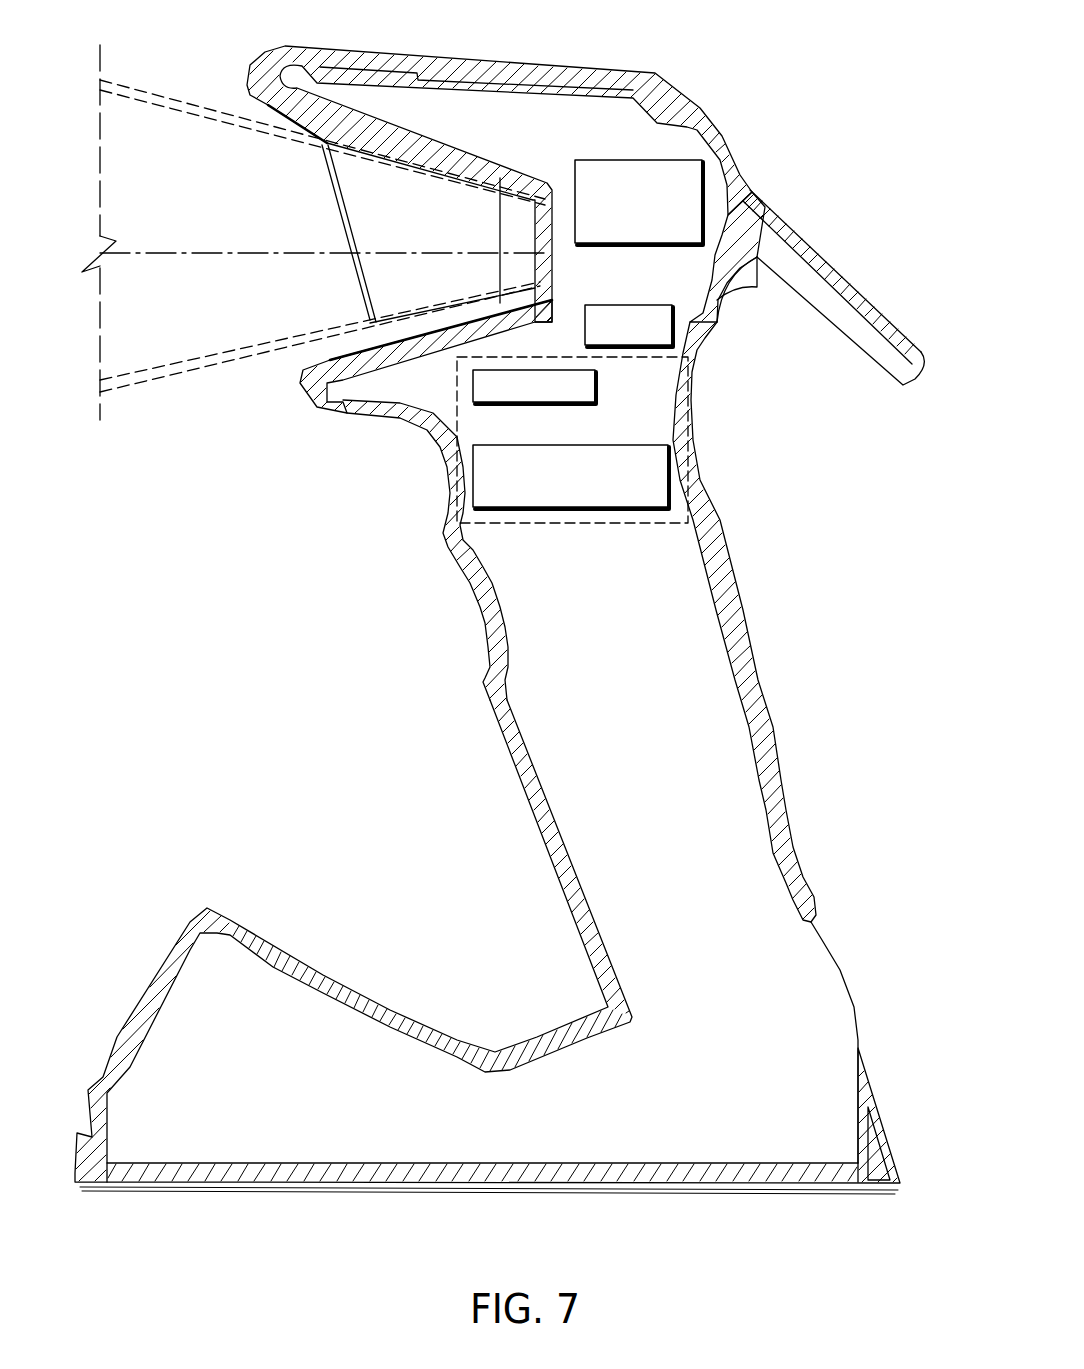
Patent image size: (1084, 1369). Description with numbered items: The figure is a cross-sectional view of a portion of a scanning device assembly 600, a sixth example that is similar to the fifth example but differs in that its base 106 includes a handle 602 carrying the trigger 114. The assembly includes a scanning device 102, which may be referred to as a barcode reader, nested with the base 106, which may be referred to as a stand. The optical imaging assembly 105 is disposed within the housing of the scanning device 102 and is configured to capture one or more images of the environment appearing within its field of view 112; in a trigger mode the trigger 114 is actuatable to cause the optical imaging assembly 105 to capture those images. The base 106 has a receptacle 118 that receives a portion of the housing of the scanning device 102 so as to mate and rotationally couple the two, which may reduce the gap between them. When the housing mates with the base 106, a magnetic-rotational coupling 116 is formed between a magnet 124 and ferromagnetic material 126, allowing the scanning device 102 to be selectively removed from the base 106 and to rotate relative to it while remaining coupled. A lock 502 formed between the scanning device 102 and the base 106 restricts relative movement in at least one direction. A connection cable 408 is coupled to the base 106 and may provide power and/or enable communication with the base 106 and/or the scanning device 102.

The scanning device assembly 600 is at (806, 49).
The scanning device 102 is at (642, 92).
The optical imaging assembly 105 is at (593, 160).
The field of view 112 is at (150, 90).
The connection cable 408 is at (843, 280).
The lock 502 is at (457, 422).
The magnetic-rotational coupling 116 is at (571, 527).
The magnet 124 is at (597, 390).
The ferromagnetic material 126 is at (669, 477).
The receptacle 118 is at (427, 447).
The trigger 114 is at (447, 540).
The base 106 is at (755, 710).
The handle 602 is at (722, 793).